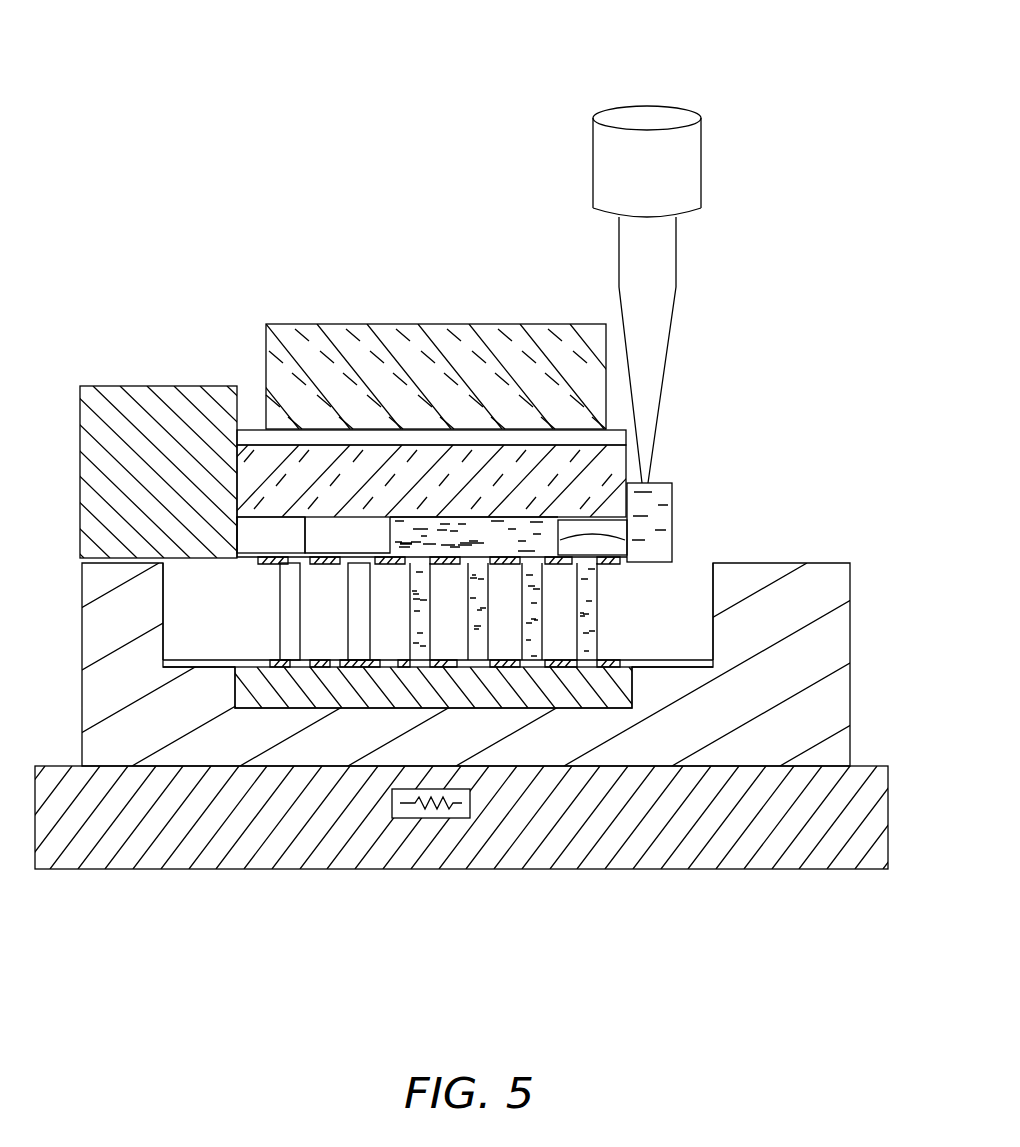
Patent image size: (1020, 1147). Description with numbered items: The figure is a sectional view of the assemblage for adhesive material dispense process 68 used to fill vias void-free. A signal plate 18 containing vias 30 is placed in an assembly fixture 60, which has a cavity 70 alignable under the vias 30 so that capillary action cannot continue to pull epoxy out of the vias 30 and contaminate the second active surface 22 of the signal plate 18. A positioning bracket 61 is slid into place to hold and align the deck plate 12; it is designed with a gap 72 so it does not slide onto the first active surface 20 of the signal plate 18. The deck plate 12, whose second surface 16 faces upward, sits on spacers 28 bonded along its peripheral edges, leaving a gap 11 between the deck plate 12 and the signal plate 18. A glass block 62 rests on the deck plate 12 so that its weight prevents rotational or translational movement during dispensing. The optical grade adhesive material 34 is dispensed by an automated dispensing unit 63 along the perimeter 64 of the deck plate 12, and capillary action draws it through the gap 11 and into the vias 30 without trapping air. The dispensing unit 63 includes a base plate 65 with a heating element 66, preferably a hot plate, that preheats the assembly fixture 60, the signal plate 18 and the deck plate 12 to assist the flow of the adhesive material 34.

The assemblage for adhesive material dispense process 68 is at (375, 100).
The automated dispensing unit 63 is at (683, 178).
The second surface 16 is at (613, 427).
The perimeter 64 is at (662, 507).
The glass block 62 is at (365, 335).
The positioning bracket 61 is at (165, 395).
The deck plate 12 is at (270, 463).
The spacers 28 is at (297, 550).
The gap 11 is at (365, 548).
The optical grade adhesive material 34 is at (615, 546).
The assembly fixture 60 is at (851, 565).
The signal plate 18 is at (700, 587).
The gap 72 is at (112, 562).
The first active surface 20 is at (350, 563).
The second active surface 22 is at (202, 667).
The cavity 70 is at (613, 692).
The vias 30 is at (480, 667).
The base plate 65 is at (695, 848).
The heating element 66 is at (448, 812).